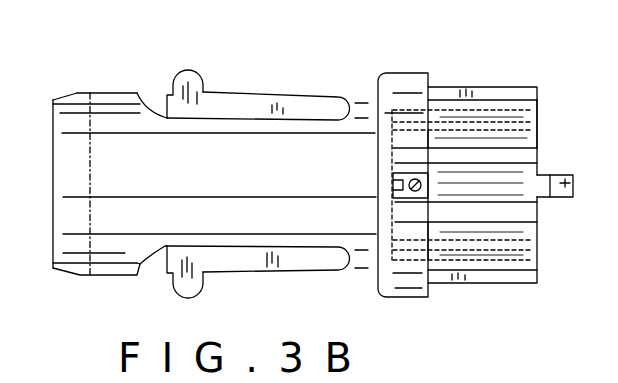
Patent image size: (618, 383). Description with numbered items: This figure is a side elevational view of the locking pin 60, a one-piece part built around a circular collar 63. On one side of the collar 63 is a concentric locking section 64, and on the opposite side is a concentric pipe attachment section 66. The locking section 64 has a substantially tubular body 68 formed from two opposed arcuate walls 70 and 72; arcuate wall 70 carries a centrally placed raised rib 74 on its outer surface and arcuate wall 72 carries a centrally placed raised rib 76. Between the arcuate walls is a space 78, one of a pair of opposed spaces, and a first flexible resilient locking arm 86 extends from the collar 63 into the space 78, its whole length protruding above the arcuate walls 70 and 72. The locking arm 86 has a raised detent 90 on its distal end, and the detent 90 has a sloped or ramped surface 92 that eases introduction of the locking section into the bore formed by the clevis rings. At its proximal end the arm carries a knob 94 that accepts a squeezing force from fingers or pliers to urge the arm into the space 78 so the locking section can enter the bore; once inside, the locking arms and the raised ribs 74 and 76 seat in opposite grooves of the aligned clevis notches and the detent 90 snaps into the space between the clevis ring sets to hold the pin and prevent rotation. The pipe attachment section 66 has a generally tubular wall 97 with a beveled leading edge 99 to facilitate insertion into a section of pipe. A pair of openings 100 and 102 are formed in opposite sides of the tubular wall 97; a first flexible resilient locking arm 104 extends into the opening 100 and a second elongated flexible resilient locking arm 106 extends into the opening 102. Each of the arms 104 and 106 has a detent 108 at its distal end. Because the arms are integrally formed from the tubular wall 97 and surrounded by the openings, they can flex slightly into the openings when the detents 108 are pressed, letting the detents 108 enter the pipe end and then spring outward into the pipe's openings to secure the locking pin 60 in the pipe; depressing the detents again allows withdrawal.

The locking pin 60 is at (328, 80).
The circular collar 63 is at (402, 83).
The locking section 64 is at (538, 105).
The pipe attachment section 66 is at (117, 92).
The tubular body 68 is at (505, 116).
The arcuate wall 70 is at (455, 107).
The arcuate wall 72 is at (498, 248).
The raised rib 74 is at (488, 99).
The raised rib 76 is at (477, 277).
The space 78 is at (521, 157).
The first flexible resilient locking arm 86 is at (490, 185).
The raised detent 90 is at (542, 190).
The sloped or ramped surface 92 is at (574, 183).
The knob 94 is at (399, 191).
The tubular wall 97 is at (125, 221).
The beveled leading edge 99 is at (77, 91).
The opening 100 is at (148, 264).
The opening 102 is at (152, 97).
The first flexible resilient locking arm 104 is at (268, 257).
The second elongated flexible resilient locking arm 106 is at (238, 108).
The detent 108 is at (190, 82).